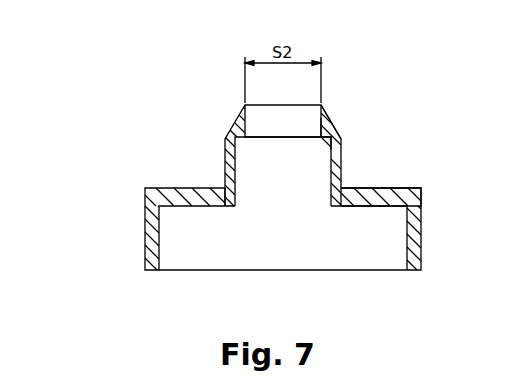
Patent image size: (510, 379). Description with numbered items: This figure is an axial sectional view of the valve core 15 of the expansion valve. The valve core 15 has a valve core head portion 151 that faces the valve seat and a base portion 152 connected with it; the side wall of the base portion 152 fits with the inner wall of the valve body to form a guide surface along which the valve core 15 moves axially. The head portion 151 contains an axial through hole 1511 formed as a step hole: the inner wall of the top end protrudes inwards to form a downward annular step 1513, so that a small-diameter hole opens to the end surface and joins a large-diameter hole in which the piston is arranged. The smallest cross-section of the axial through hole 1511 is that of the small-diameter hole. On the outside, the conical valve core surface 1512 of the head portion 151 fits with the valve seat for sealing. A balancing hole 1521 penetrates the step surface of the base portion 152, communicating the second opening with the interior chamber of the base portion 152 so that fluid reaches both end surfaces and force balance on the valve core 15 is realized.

The valve core 15 is at (53, 47).
The valve core head portion 151 is at (225, 152).
The base portion 152 is at (150, 213).
The axial through hole 1511 is at (298, 170).
The valve core surface 1512 is at (327, 112).
The annular step 1513 is at (333, 134).
The balancing hole 1521 is at (365, 193).